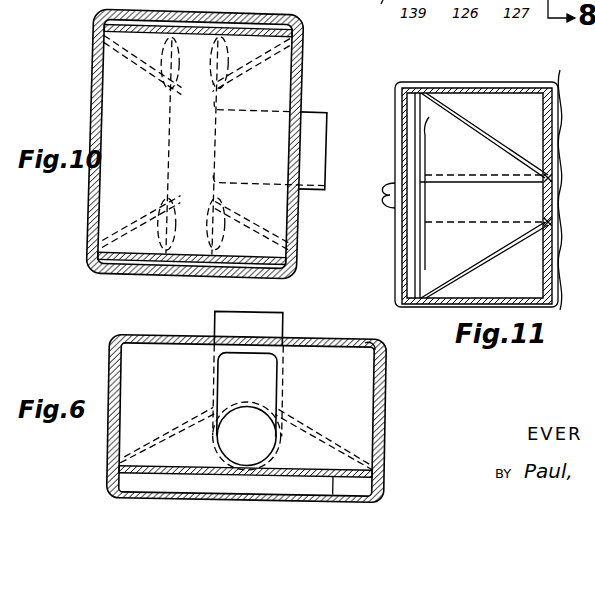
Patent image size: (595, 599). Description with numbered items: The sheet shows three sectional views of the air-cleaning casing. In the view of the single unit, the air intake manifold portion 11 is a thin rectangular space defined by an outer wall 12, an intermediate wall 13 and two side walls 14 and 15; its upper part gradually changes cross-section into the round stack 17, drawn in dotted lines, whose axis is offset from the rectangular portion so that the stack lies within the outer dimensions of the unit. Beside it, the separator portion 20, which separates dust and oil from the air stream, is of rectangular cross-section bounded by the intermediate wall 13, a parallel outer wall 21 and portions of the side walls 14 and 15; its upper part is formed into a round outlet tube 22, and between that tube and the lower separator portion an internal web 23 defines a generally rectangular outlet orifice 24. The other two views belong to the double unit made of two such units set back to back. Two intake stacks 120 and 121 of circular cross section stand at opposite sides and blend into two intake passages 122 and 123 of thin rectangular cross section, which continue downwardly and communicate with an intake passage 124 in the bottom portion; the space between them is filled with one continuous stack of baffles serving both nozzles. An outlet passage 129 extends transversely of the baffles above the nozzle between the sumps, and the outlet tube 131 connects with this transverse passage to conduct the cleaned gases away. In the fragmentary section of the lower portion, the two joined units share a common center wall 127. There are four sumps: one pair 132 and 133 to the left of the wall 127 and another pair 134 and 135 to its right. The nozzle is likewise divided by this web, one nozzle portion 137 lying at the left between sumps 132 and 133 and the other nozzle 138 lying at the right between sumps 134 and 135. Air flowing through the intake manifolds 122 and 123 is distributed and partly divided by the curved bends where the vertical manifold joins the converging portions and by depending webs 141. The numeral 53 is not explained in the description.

In FIG. 10, the intake stack 120 is at (234, 69).
In FIG. 10, the intake stack 121 is at (224, 199).
In FIG. 10, the intake passage 122 is at (260, 0).
In FIG. 10, the intake passage 123 is at (131, 270).
In FIG. 10, the outlet passage 129 is at (186, 120).
In FIG. 10, the outlet tube 131 is at (312, 120).
In FIG. 6, the air intake manifold portion 11 is at (206, 484).
In FIG. 6, the outer wall 12 is at (154, 499).
In FIG. 6, the intermediate wall 13 is at (331, 476).
In FIG. 6, the side wall 14 is at (384, 443).
In FIG. 6, the side wall 15 is at (110, 449).
In FIG. 6, the round stack 17 is at (273, 463).
In FIG. 6, the separator portion 20 is at (172, 356).
In FIG. 6, the outer wall 21 is at (136, 324).
In FIG. 6, the outlet tube 22 is at (268, 317).
In FIG. 6, the internal web 23 is at (271, 365).
In FIG. 6, the outlet orifice 24 is at (266, 362).
In FIG. 11, the intake passage 124 is at (407, 237).
In FIG. 11, the common wall 127 is at (545, 127).
In FIG. 11, the sump 132 is at (487, 106).
In FIG. 11, the sump 133 is at (460, 288).
In FIG. 11, the sump 134 is at (560, 86).
In FIG. 11, the sump 135 is at (555, 295).
In FIG. 11, the nozzle portion 137 is at (460, 205).
In FIG. 11, the nozzle 138 is at (553, 193).
In FIG. 11, the depending web 141 is at (420, 205).
In FIG. 11, the wall 53 is at (586, 253).